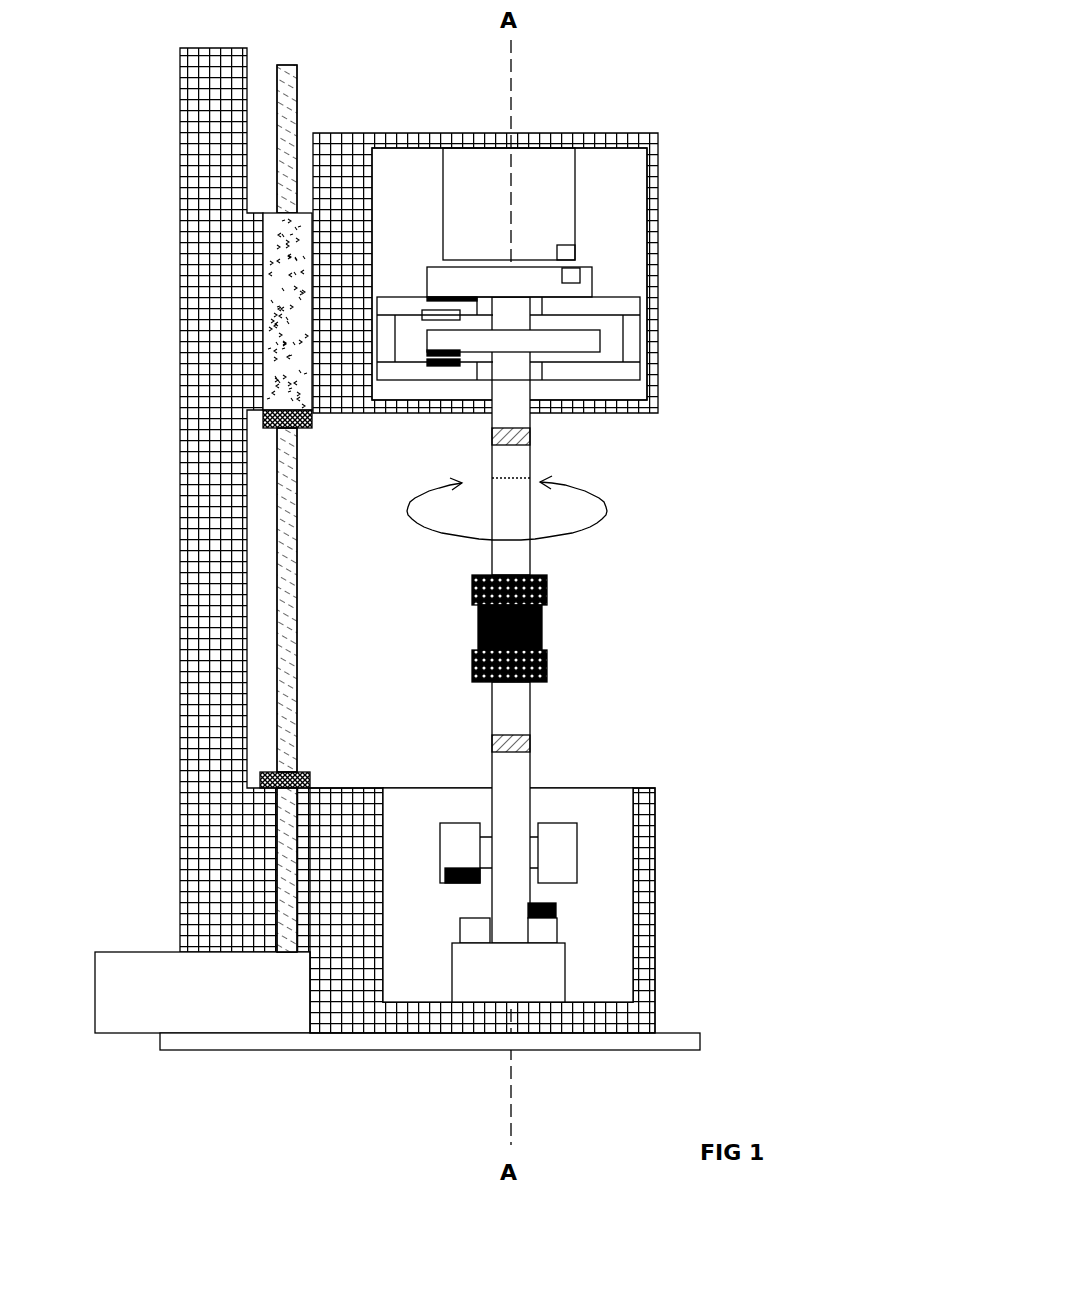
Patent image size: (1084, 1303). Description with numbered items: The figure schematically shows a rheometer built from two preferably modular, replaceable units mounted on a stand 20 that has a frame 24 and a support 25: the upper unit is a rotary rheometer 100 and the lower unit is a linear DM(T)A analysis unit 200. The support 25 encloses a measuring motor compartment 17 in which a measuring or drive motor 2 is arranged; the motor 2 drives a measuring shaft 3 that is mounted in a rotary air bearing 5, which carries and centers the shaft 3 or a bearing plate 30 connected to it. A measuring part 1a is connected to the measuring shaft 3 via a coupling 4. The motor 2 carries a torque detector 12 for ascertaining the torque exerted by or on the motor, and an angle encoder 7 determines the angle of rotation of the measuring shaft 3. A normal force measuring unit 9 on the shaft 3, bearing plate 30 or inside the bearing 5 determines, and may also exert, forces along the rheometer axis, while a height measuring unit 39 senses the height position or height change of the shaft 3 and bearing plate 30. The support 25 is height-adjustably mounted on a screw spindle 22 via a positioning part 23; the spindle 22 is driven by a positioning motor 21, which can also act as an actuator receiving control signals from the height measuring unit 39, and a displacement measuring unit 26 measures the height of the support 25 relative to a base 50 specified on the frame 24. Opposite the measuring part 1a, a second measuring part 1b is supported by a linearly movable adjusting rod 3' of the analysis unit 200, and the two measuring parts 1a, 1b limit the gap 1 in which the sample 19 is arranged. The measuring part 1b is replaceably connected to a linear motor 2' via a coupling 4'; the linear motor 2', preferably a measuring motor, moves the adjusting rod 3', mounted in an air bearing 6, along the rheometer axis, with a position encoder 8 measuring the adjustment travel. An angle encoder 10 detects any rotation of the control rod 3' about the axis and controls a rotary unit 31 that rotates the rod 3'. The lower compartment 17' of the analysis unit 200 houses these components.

The gap 1 is at (475, 647).
The measuring part 1a is at (473, 597).
The measuring part 1b is at (473, 672).
The measuring or drive motor 2 is at (530, 155).
The linear motor 2' is at (541, 1021).
The measuring shaft 3 is at (481, 436).
The adjusting rod 3' is at (477, 812).
The coupling 4 is at (542, 453).
The coupling 4' is at (556, 752).
The rotary air bearing 5 is at (613, 353).
The air bearing 6 is at (458, 835).
The angle encoder 7 is at (580, 278).
The position encoder 8 is at (557, 903).
The normal force measuring unit 9 is at (428, 364).
The angle encoder 10 is at (458, 867).
The torque detector 12 is at (568, 245).
The measuring motor compartment 17 is at (509, 245).
The lower housing interior 17' is at (508, 954).
The sample 19 is at (480, 630).
The stand 20 is at (145, 612).
The positioning motor 21 is at (200, 1003).
The screw spindle 22 is at (285, 565).
The positioning part 23 is at (262, 366).
The frame 24 is at (348, 1007).
The support 25 is at (338, 162).
The displacement measuring unit 26 is at (312, 428).
The bearing plate 30 is at (537, 342).
The rotary unit 31 is at (470, 930).
The height measuring unit 39 is at (430, 312).
The base 50 is at (350, 786).
The rotary rheometer 100 is at (628, 235).
The linear DM(T)A analysis unit 200 is at (634, 922).